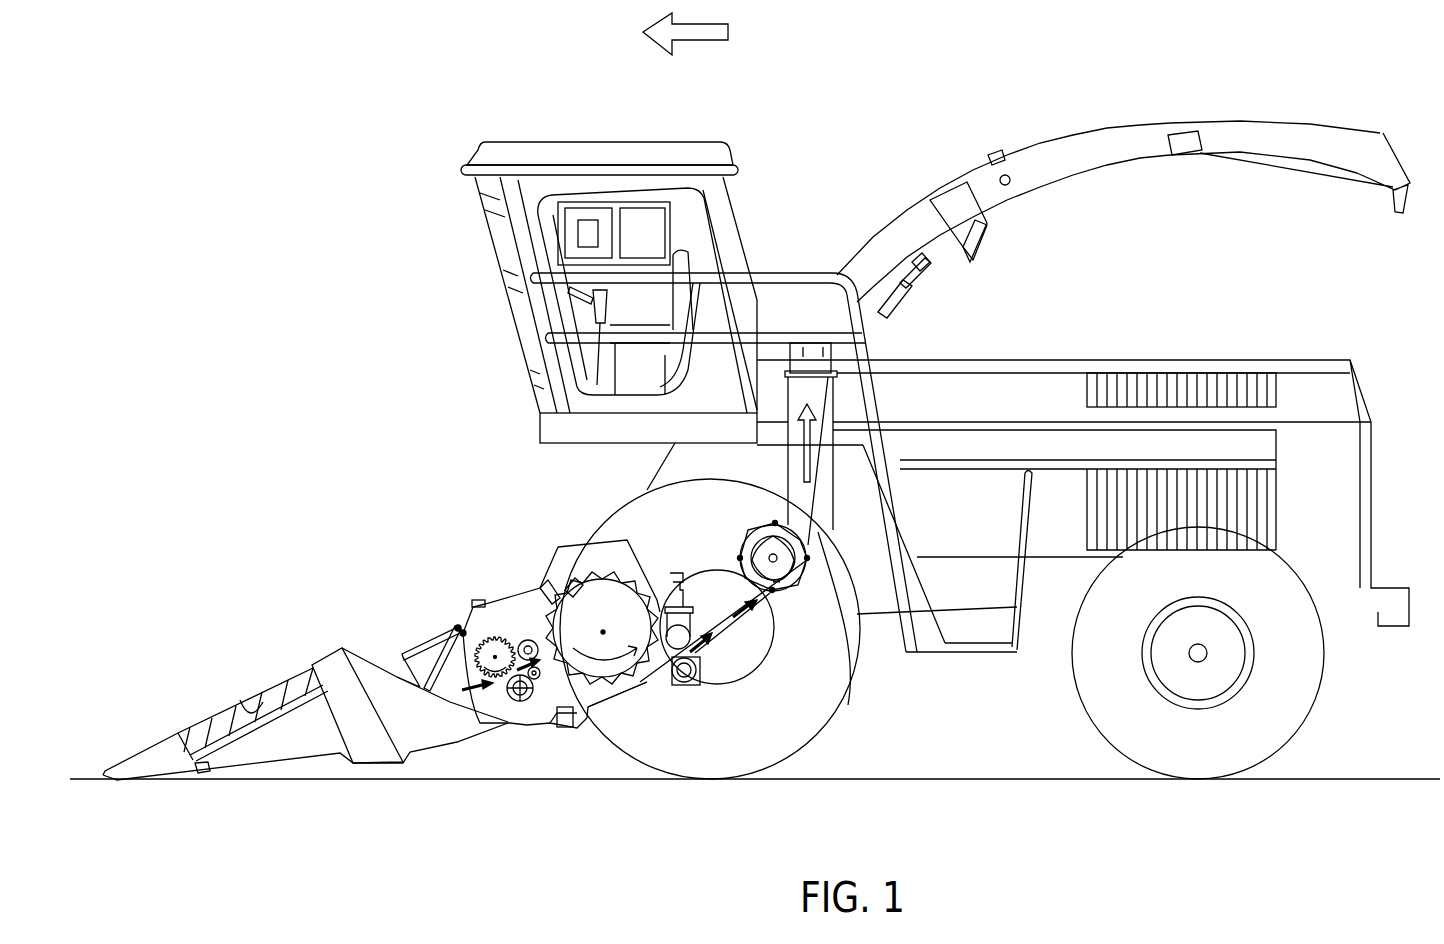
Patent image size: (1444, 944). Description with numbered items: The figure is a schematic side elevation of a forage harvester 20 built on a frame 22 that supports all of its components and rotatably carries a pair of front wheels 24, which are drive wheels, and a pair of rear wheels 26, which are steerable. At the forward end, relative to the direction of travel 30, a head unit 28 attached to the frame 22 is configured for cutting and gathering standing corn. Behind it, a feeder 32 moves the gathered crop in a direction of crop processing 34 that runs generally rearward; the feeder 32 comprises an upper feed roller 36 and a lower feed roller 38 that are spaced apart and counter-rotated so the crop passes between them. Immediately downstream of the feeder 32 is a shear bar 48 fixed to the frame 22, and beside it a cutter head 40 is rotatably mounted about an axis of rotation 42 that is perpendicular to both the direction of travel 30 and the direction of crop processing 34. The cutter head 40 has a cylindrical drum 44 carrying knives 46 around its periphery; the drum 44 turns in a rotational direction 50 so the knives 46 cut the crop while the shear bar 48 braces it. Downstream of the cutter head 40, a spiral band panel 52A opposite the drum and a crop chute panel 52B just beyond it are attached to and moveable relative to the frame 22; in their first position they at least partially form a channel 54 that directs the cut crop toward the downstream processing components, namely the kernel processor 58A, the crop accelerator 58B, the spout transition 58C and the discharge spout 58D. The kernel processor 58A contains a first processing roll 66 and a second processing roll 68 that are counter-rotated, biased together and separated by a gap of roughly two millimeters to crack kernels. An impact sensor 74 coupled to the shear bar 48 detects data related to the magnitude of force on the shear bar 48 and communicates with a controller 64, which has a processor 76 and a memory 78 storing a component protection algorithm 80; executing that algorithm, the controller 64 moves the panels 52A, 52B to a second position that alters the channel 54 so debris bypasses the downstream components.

The forage harvester 20 is at (345, 138).
The frame 22 is at (1045, 590).
The front wheels 24 is at (817, 690).
The rear wheels 26 is at (1267, 728).
The head unit 28 is at (375, 687).
The direction of travel 30 is at (707, 32).
The feeder 32 is at (488, 580).
The direction of crop processing 34 is at (470, 700).
The upper feed roller 36 is at (470, 620).
The lower feed roller 38 is at (527, 723).
The cutter head 40 is at (581, 545).
The axis of rotation 42 is at (623, 620).
The drum 44 is at (587, 570).
The knives 46 is at (563, 577).
The shear bar 48 is at (555, 713).
The rotational direction 50 is at (625, 600).
The spiral band panel 52A is at (603, 703).
The crop chute panel 52B is at (650, 673).
The channel 54 is at (617, 697).
The kernel processor 58A is at (683, 683).
The crop accelerator 58B is at (817, 688).
The spout transition 58C is at (815, 392).
The discharge spout 58D is at (907, 220).
The controller 64 is at (560, 218).
The first processing roll 66 is at (706, 600).
The second processing roll 68 is at (700, 667).
The impact sensor 74 is at (550, 723).
The processor 76 is at (640, 208).
The memory 78 is at (597, 208).
The component protection algorithm 80 is at (588, 220).